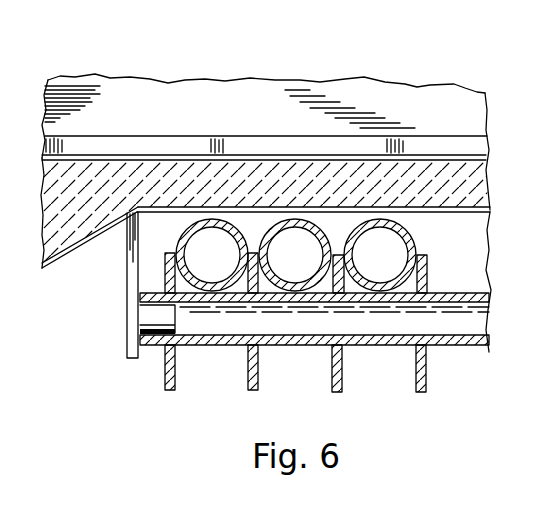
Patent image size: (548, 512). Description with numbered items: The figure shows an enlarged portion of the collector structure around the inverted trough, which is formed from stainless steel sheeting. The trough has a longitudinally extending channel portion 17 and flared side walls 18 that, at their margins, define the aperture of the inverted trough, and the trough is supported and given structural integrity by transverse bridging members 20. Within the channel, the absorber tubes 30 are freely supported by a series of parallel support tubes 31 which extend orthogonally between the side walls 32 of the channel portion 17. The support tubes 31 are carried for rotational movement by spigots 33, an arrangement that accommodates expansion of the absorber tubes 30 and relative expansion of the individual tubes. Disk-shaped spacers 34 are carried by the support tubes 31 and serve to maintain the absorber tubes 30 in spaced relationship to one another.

The channel portion 17 is at (239, 205).
The flared side walls 18 is at (86, 242).
The transverse bridging members 20 is at (268, 116).
The absorber tubes 30 is at (286, 271).
The support tubes 31 is at (449, 328).
The side walls 32 is at (132, 307).
The spigots 33 is at (157, 317).
The disk-shaped spacers 34 is at (416, 370).